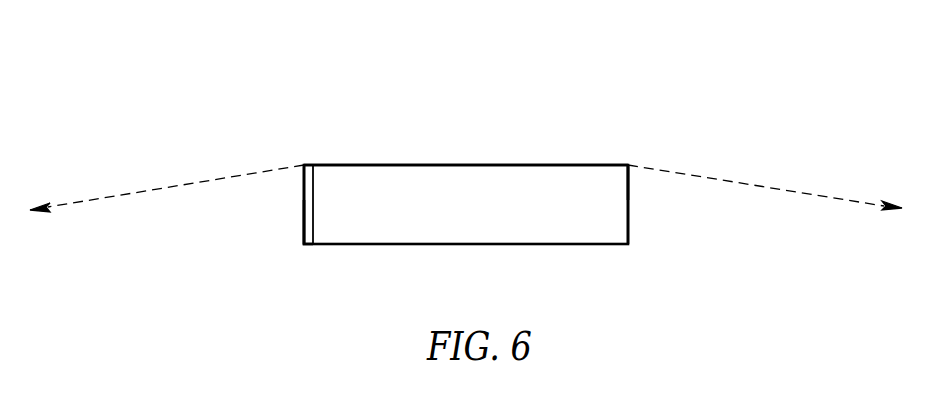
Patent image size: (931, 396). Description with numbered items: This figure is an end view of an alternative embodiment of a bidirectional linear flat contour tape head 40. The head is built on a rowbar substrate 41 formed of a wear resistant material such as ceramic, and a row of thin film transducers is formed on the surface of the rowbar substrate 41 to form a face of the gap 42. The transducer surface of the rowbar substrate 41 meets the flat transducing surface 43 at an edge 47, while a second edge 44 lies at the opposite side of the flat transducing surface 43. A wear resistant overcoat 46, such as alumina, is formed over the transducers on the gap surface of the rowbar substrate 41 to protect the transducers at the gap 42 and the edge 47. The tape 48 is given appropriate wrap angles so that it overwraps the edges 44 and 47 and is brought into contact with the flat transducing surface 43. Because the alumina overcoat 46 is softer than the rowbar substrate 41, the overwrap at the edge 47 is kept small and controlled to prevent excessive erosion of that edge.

The bidirectional linear flat contour tape head 40 is at (592, 85).
The rowbar substrate 41 is at (628, 223).
The gap 42 is at (313, 165).
The flat transducing surface 43 is at (468, 165).
The edge 44 is at (628, 165).
The wear resistant overcoat 46 is at (304, 233).
The edge 47 is at (305, 165).
The tape 48 is at (168, 188).